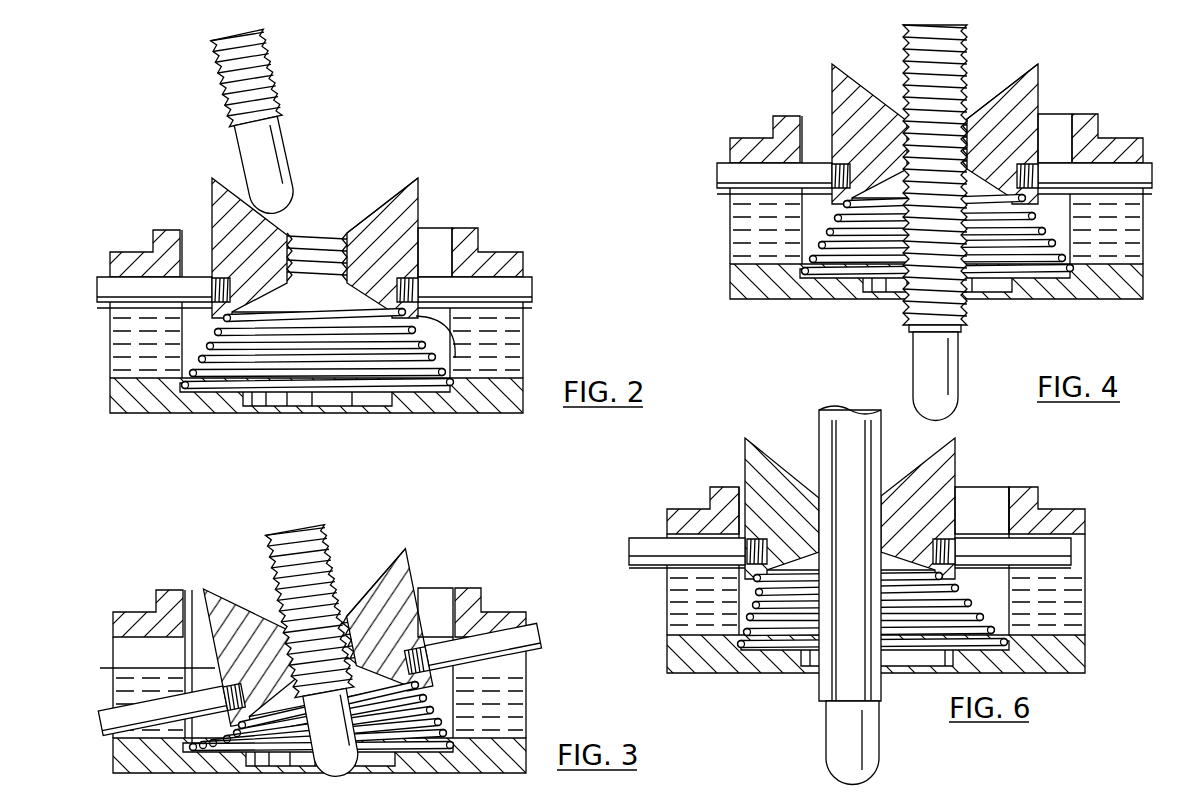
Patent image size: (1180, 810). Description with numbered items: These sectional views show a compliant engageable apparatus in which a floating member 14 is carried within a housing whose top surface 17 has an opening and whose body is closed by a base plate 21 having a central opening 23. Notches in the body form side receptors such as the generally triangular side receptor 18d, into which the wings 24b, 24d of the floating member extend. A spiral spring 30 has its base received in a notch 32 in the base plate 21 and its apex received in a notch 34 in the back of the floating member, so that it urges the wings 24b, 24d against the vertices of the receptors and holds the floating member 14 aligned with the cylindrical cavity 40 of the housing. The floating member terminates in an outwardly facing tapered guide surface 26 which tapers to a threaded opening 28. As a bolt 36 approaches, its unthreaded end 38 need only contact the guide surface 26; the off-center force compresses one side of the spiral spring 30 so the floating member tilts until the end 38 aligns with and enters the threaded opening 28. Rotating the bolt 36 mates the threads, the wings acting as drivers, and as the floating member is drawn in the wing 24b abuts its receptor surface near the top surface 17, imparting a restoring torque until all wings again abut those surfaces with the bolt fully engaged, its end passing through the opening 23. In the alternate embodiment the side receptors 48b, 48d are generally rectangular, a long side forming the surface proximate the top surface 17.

In FIG. 2, the floating member 14 is at (230, 222).
In FIG. 3, the top surface 17 is at (465, 588).
In FIG. 2, the side receptor 18d is at (120, 365).
In FIG. 2, the base plate 21 is at (140, 405).
In FIG. 2, the central opening 23 is at (375, 400).
In FIG. 2, the wing 24b is at (523, 284).
In FIG. 3, the wing 24b is at (530, 630).
In FIG. 6, the wing 24b is at (1071, 545).
In FIG. 2, the wing 24d is at (103, 289).
In FIG. 3, the wing 24d is at (171, 709).
In FIG. 6, the wing 24d is at (634, 547).
In FIG. 2, the tapered guide surface 26 is at (383, 202).
In FIG. 2, the threaded opening 28 is at (326, 243).
In FIG. 2, the spiral spring 30 is at (230, 374).
In FIG. 6, the spiral spring 30 is at (774, 632).
In FIG. 2, the notch 32 is at (180, 399).
In FIG. 2, the notch 34 is at (448, 343).
In FIG. 2, the bolt 36 is at (228, 90).
In FIG. 2, the unthreaded end 38 is at (243, 154).
In FIG. 2, the cylindrical cavity 40 is at (437, 232).
In FIG. 6, the side receptor 48b is at (1076, 589).
In FIG. 6, the side receptor 48d is at (670, 604).